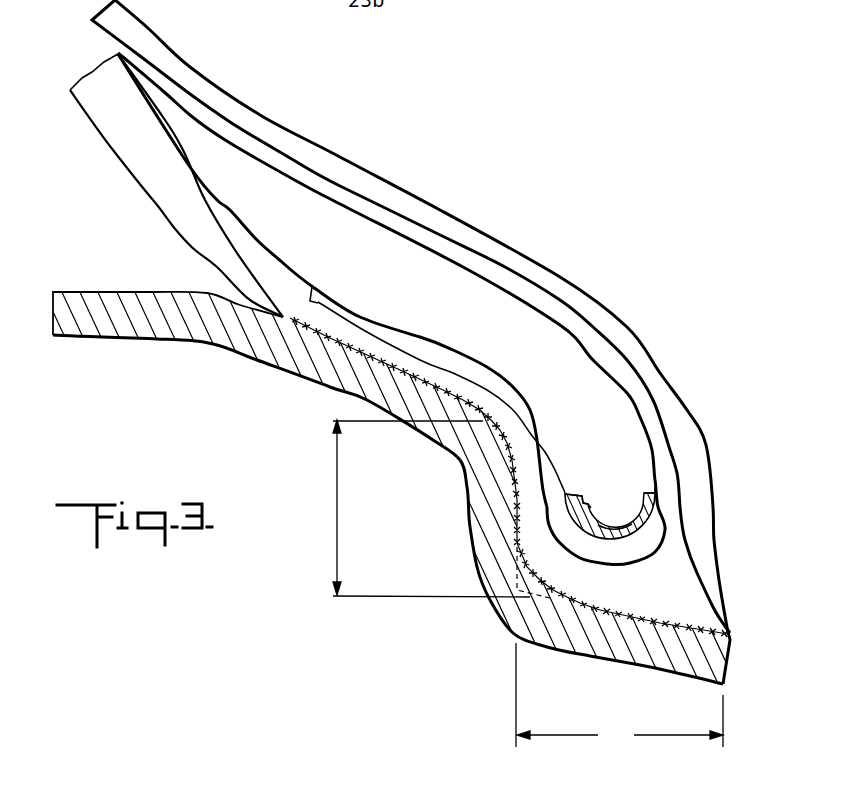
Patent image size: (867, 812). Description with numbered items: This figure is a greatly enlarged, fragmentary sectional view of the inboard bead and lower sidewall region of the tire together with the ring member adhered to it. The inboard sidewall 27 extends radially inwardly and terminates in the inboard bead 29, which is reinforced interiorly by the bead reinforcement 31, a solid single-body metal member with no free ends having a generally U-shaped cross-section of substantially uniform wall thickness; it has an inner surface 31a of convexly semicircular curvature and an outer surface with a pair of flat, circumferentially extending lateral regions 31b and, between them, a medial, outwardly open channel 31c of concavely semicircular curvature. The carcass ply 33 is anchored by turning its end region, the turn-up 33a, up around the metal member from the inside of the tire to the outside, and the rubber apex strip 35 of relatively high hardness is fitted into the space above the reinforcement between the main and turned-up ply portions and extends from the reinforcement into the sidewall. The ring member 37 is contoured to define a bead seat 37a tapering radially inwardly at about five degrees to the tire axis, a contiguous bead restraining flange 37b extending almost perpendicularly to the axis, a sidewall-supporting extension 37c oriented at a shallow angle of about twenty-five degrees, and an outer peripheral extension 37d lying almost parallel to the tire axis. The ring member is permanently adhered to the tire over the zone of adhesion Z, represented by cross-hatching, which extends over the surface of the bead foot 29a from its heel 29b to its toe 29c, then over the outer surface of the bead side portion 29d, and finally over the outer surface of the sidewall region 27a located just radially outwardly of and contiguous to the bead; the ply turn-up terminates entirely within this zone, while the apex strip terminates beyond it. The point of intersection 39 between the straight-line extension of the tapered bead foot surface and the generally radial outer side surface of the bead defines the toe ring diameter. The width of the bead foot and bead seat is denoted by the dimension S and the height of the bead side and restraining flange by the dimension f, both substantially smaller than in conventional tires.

The inboard sidewall 27 is at (162, 183).
The inboard sidewall region 27a is at (377, 347).
The inboard bead 29 is at (710, 538).
The bead foot 29a is at (603, 612).
The bead heel 29b is at (710, 620).
The bead toe 29c is at (535, 545).
The bead side portion 29d is at (530, 482).
The inboard bead reinforcement 31 is at (657, 508).
The inner surface 31a is at (608, 545).
The flat lateral regions 31b is at (566, 493).
The medial channel 31c is at (586, 500).
The carcass ply 33 is at (310, 165).
The carcass ply turn-up 33a is at (312, 304).
The apex strip 35 is at (327, 220).
The inboard ring member 37 is at (464, 606).
The bead seat 37a is at (644, 662).
The bead restraining flange 37b is at (483, 513).
The sidewall-supporting extension 37c is at (298, 380).
The outer peripheral extension 37d is at (88, 328).
The point of intersection 39 is at (517, 590).
The zone of adhesion Z is at (410, 370).
The bead side height dimension f is at (427, 508).
The bead foot width dimension S is at (619, 695).